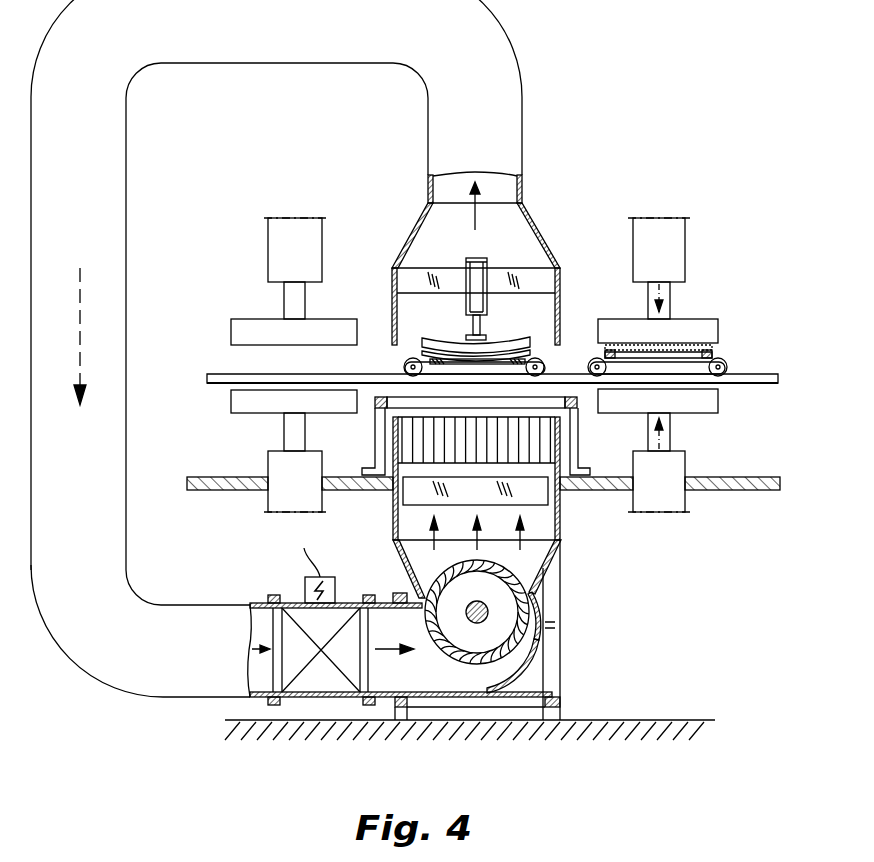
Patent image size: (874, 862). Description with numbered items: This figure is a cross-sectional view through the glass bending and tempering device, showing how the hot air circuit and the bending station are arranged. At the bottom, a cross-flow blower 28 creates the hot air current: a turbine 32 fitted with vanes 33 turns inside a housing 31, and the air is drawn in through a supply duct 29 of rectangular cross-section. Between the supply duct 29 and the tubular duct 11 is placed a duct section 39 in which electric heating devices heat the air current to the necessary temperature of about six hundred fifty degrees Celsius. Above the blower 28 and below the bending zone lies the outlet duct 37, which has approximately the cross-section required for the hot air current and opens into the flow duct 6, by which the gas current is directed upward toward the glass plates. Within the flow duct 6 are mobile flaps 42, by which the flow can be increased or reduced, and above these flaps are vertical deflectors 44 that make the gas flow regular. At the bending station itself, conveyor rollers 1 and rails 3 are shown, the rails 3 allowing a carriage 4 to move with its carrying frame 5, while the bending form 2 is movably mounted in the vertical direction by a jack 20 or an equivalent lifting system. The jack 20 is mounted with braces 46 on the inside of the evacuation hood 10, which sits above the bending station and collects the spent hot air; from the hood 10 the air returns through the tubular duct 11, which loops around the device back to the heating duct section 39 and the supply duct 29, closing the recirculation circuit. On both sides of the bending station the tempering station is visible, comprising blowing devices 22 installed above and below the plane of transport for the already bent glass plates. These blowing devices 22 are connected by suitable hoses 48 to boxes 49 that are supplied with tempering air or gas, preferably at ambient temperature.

The conveyor rollers 1 is at (397, 404).
The bending form 2 is at (512, 341).
The rails 3 is at (745, 378).
The carriage 4 is at (459, 362).
The carrying frame 5 is at (437, 365).
The flow duct 6 is at (540, 521).
The evacuation hood 10 is at (525, 243).
The tubular duct 11 is at (270, 47).
The jack 20 is at (468, 260).
The blowing devices 22 is at (235, 335).
The cross-flow blower 28 is at (545, 590).
The supply duct 29 is at (390, 678).
The housing 31 is at (537, 660).
The turbine 32 is at (507, 618).
The vanes 33 is at (467, 663).
The outlet duct 37 is at (535, 557).
The duct section 39 is at (325, 683).
The mobile flaps 42 is at (417, 497).
The vertical deflectors 44 is at (540, 441).
The braces 46 is at (413, 272).
The hoses 48 is at (292, 300).
The boxes 49 is at (272, 250).